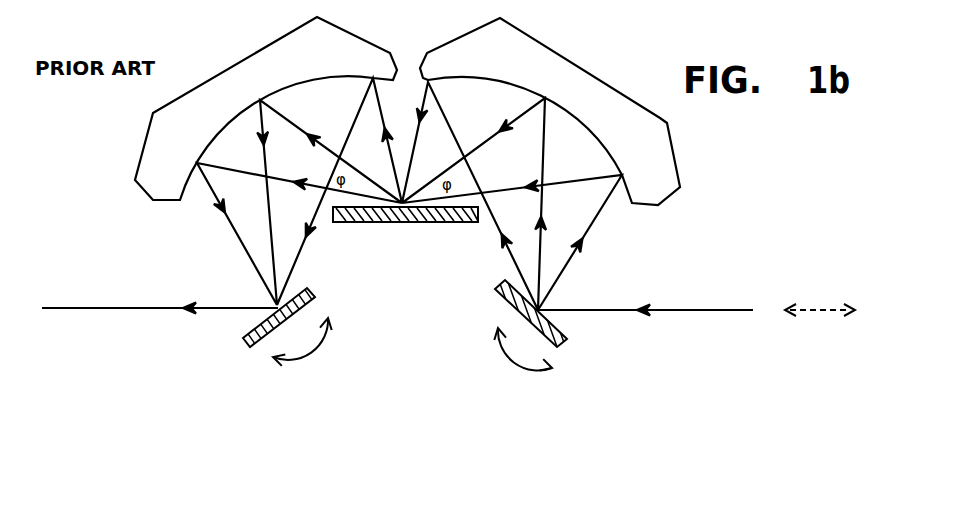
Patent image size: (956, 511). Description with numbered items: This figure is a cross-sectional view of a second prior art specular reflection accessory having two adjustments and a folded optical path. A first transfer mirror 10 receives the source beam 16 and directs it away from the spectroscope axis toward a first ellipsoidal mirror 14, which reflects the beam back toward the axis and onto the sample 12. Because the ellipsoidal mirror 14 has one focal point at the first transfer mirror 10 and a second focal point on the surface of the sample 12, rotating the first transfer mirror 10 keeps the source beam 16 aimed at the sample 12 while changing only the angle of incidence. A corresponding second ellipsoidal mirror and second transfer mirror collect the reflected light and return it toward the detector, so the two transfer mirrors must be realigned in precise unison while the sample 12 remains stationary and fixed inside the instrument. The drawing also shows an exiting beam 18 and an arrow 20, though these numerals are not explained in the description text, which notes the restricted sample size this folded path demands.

The first transfer mirror 10 is at (250, 352).
The sample 12 is at (396, 224).
The first ellipsoidal mirror 14 is at (220, 90).
The source beam 16 is at (663, 302).
The reflected output light beam 18 is at (140, 317).
The translation direction of beam 20 is at (812, 318).